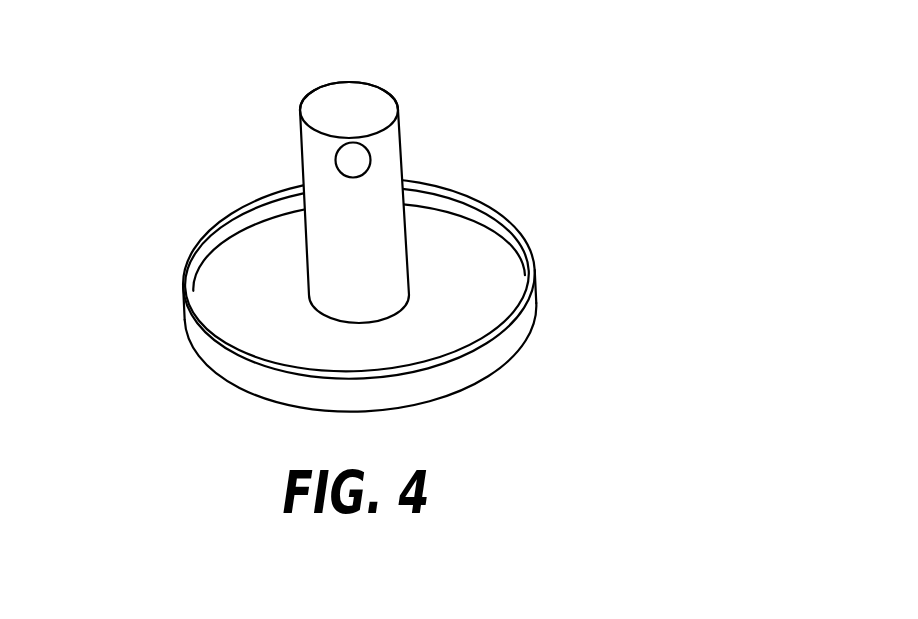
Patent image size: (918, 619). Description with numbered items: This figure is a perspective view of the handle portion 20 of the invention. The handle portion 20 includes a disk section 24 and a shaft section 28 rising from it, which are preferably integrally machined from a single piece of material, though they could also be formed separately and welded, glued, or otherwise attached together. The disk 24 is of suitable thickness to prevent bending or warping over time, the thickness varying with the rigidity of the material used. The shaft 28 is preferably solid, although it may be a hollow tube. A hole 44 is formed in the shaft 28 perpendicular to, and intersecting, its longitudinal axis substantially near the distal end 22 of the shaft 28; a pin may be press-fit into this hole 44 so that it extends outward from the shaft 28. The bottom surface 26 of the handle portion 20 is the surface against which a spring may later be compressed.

The handle portion 20 is at (346, 210).
The distal end 22 is at (375, 162).
The disk section 24 is at (220, 360).
The bottom surface 26 is at (455, 290).
The shaft section 28 is at (405, 168).
The hole 44 is at (356, 160).